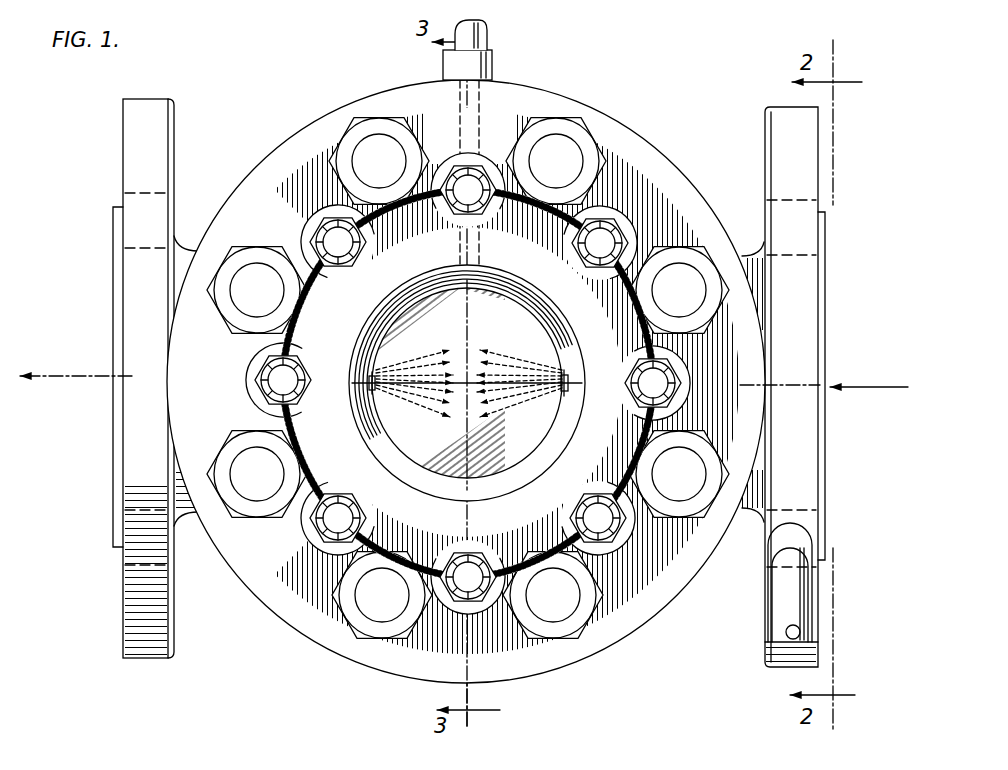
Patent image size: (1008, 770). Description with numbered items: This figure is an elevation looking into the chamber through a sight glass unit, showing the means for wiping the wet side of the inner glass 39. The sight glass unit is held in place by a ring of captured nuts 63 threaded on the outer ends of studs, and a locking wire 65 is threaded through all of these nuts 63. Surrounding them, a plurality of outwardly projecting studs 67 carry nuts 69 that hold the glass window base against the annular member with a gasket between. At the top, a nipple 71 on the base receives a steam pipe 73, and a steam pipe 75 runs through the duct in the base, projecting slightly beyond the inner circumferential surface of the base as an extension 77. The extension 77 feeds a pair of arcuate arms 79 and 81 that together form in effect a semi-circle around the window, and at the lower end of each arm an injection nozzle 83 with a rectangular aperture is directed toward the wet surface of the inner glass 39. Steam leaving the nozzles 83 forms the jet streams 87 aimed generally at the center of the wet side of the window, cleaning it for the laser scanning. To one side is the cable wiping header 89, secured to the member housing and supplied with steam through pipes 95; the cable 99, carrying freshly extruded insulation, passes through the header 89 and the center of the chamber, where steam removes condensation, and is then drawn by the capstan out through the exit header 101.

The inner glass 39 is at (548, 328).
The captured nut 63 is at (598, 500).
The locking wire 65 is at (630, 256).
The outwardly projecting studs 67 is at (548, 612).
The nuts 69 is at (600, 612).
The nipple 71 is at (493, 70).
The steam pipe 73 is at (482, 37).
The steam pipe 75 is at (476, 126).
The extension 77 is at (478, 254).
The arm 79 is at (428, 266).
The arm 81 is at (514, 276).
The injection nozzle 83 is at (568, 382).
The jet streams 87 is at (450, 362).
The cable wiping header 89 is at (840, 168).
The pipes 95 is at (800, 588).
The cable 99 is at (580, 392).
The exit header 101 is at (158, 128).